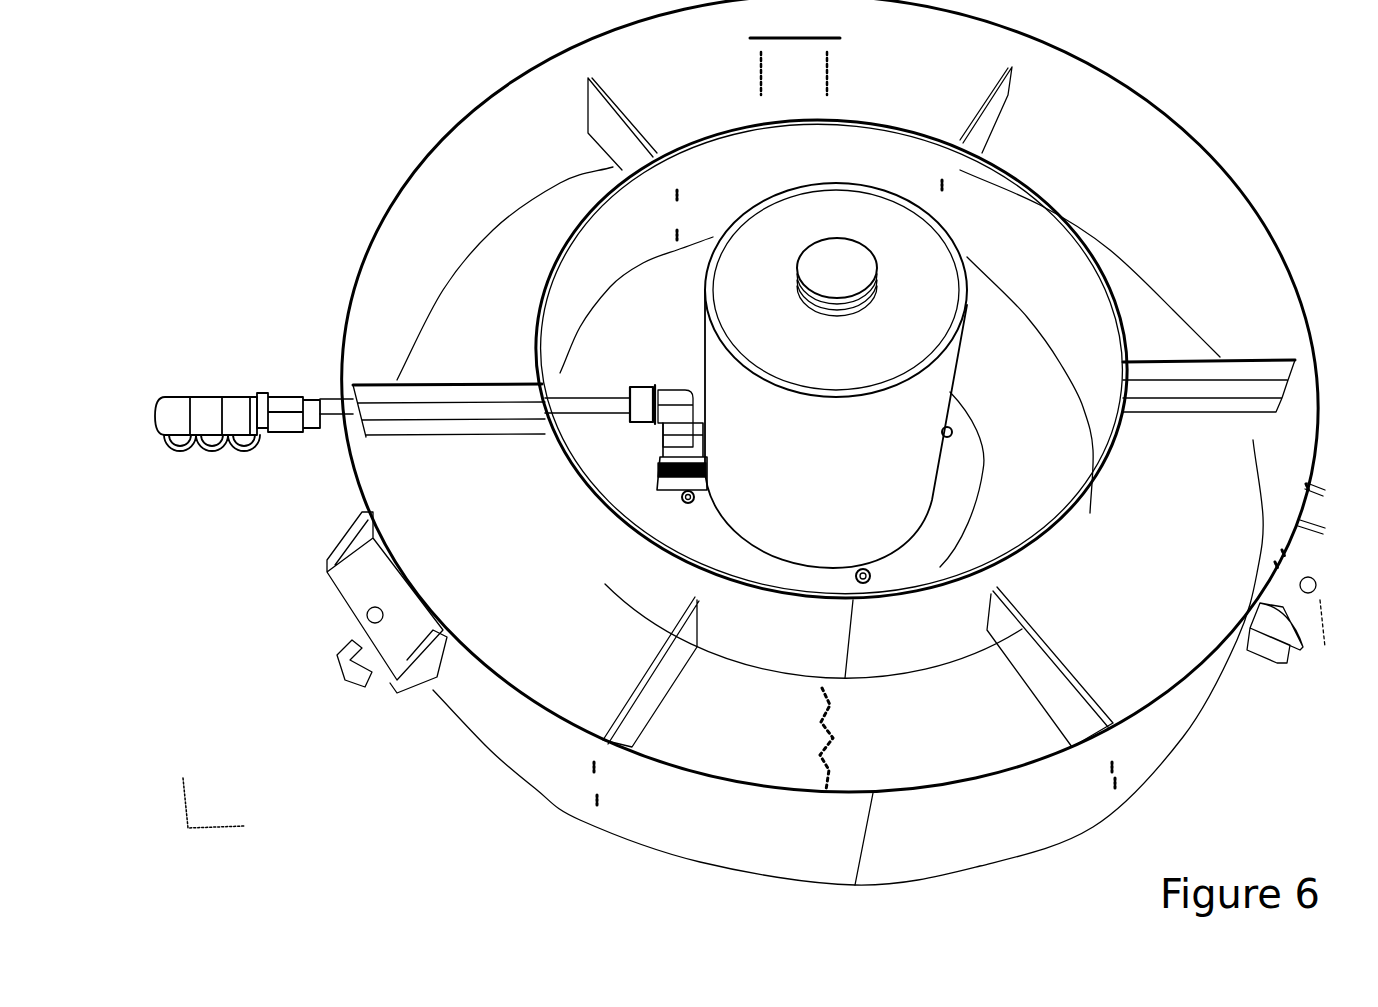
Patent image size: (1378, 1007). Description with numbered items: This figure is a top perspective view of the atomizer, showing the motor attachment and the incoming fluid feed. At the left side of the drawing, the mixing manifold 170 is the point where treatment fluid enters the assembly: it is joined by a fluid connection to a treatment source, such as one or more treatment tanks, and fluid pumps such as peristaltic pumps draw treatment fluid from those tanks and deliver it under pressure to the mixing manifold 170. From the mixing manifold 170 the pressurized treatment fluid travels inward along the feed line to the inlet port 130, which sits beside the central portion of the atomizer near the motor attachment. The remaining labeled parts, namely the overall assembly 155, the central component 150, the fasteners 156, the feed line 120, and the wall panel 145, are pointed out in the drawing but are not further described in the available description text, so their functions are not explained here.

The housing assembly 155 is at (350, 256).
The central cylinder 150 is at (960, 381).
The fastener 156 is at (882, 571).
The conduit 120 is at (597, 415).
The inlet port 130 is at (653, 488).
The mixing manifold 170 is at (208, 482).
The outer wall panel 145 is at (833, 738).